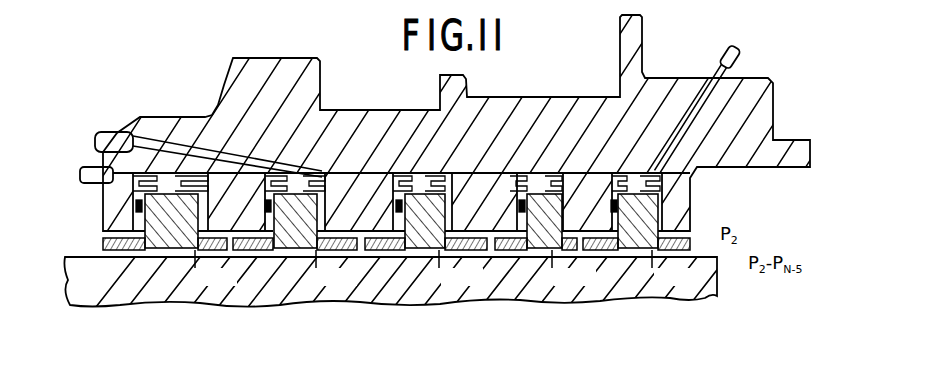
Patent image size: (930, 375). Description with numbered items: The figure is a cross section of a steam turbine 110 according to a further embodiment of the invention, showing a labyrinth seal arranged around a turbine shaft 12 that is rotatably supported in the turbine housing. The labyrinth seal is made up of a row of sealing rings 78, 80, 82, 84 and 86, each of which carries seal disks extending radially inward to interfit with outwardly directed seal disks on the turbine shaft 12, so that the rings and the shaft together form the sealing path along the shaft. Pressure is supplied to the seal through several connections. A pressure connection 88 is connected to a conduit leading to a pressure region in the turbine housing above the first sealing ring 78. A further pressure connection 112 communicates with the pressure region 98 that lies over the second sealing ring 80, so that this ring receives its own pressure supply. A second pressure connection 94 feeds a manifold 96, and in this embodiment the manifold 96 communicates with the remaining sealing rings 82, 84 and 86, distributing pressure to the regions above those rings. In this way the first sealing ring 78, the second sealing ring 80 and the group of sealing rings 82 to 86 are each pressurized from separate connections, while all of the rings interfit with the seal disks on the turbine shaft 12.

The steam turbine 110 is at (790, 76).
The further pressure connection 112 is at (113, 133).
The pressure connection 88 is at (80, 170).
The pressure region 98 is at (313, 192).
The sealing ring 82 is at (442, 188).
The manifold 96 is at (476, 190).
The sealing ring 84 is at (560, 188).
The sealing ring 86 is at (645, 188).
The second pressure connection 94 is at (740, 57).
The sealing ring 78 is at (170, 250).
The sealing ring 80 is at (300, 250).
The turbine shaft 12 is at (717, 294).